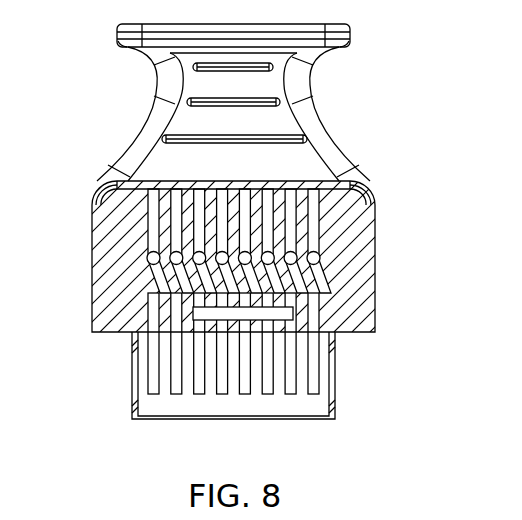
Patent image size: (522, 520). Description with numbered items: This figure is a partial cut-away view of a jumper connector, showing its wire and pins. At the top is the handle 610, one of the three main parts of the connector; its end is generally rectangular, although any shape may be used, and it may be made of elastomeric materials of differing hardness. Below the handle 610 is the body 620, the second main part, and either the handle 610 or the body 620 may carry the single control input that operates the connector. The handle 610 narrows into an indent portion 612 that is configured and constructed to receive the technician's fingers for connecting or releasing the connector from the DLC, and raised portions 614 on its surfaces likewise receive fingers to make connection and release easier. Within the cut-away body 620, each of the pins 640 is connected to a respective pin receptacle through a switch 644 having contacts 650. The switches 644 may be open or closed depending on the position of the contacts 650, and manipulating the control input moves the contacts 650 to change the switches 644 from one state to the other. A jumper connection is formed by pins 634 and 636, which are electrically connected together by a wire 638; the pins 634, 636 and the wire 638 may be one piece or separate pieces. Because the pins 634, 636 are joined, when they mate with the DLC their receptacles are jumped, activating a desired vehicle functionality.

The handle 610 is at (350, 35).
The indent portion 612 is at (312, 73).
The raised portions 614 is at (161, 138).
The body 620 is at (376, 291).
The pin 634 is at (195, 372).
The pin 636 is at (296, 373).
The wire 638 is at (193, 312).
The pins 640 is at (181, 412).
The switch 644 is at (134, 218).
The contacts 650 is at (152, 282).